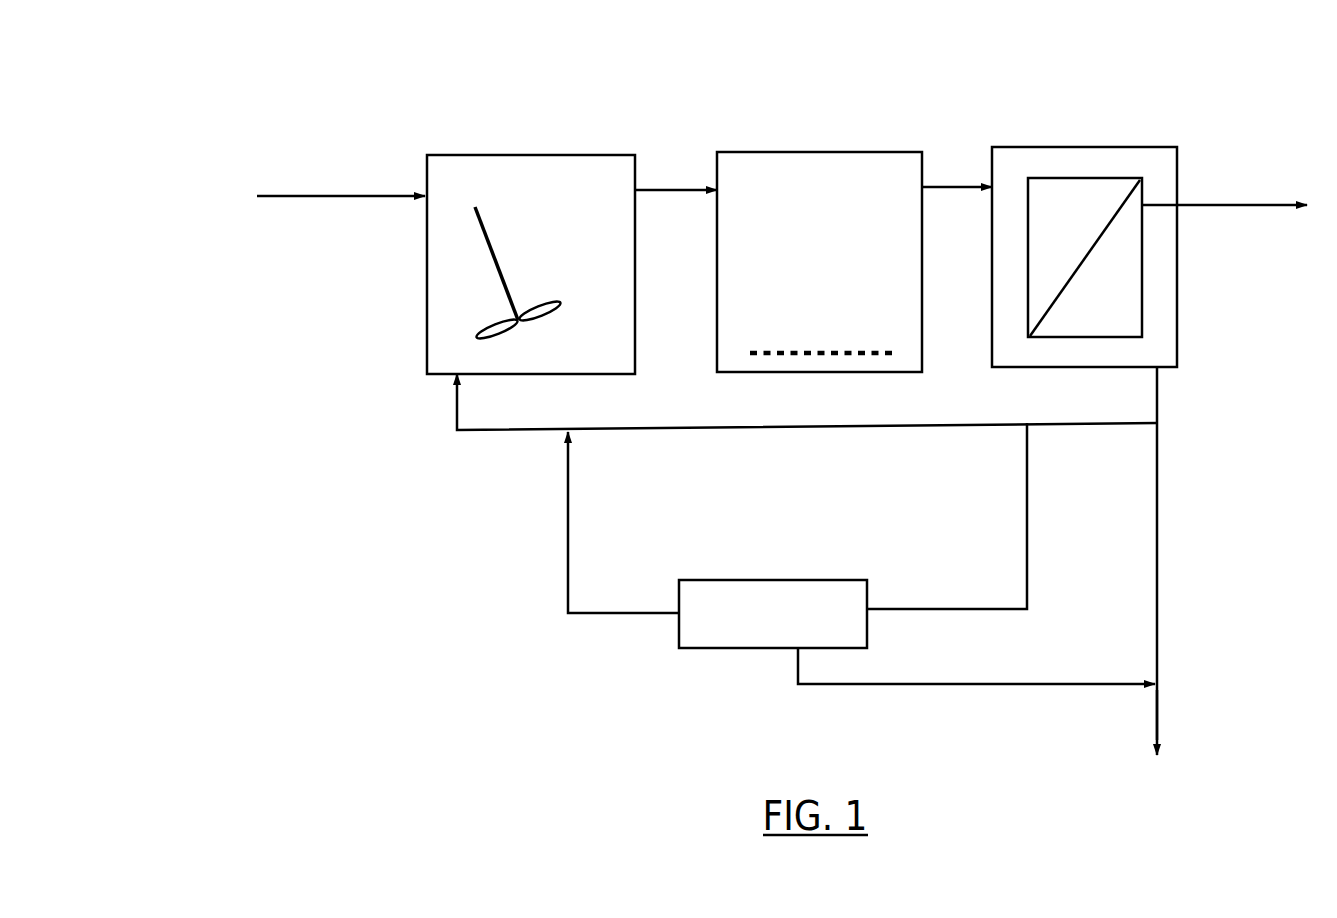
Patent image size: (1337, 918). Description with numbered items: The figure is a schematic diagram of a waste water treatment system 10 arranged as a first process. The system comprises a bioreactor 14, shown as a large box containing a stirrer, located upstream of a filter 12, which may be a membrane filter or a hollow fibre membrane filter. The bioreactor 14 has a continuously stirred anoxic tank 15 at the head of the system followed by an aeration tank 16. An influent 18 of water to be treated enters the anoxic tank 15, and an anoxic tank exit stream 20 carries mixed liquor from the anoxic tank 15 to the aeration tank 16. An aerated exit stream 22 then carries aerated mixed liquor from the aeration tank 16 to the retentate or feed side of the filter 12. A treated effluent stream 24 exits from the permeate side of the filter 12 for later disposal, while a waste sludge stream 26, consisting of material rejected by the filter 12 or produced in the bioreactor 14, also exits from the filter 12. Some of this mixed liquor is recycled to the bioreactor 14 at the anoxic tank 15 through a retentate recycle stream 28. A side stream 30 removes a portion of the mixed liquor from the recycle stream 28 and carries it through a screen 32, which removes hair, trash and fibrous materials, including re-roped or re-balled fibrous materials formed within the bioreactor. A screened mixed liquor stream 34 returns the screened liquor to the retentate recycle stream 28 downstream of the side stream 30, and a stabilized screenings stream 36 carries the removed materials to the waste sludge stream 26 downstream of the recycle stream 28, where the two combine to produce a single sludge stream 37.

The waste water treatment system 10 is at (745, 82).
The filter 12 is at (1083, 147).
The bioreactor 14 is at (468, 101).
The anoxic tank 15 is at (427, 283).
The aeration tank 16 is at (820, 152).
The influent 18 is at (310, 196).
The anoxic tank exit stream 20 is at (667, 190).
The aerated exit stream 22 is at (940, 187).
The treated effluent stream 24 is at (1235, 205).
The waste sludge stream 26 is at (1157, 507).
The retentate recycle stream 28 is at (782, 428).
The side stream 30 is at (1027, 520).
The screen 32 is at (757, 580).
The screened mixed liquor stream 34 is at (568, 530).
The screenings stream 36 is at (978, 684).
The single sludge stream 37 is at (1160, 713).